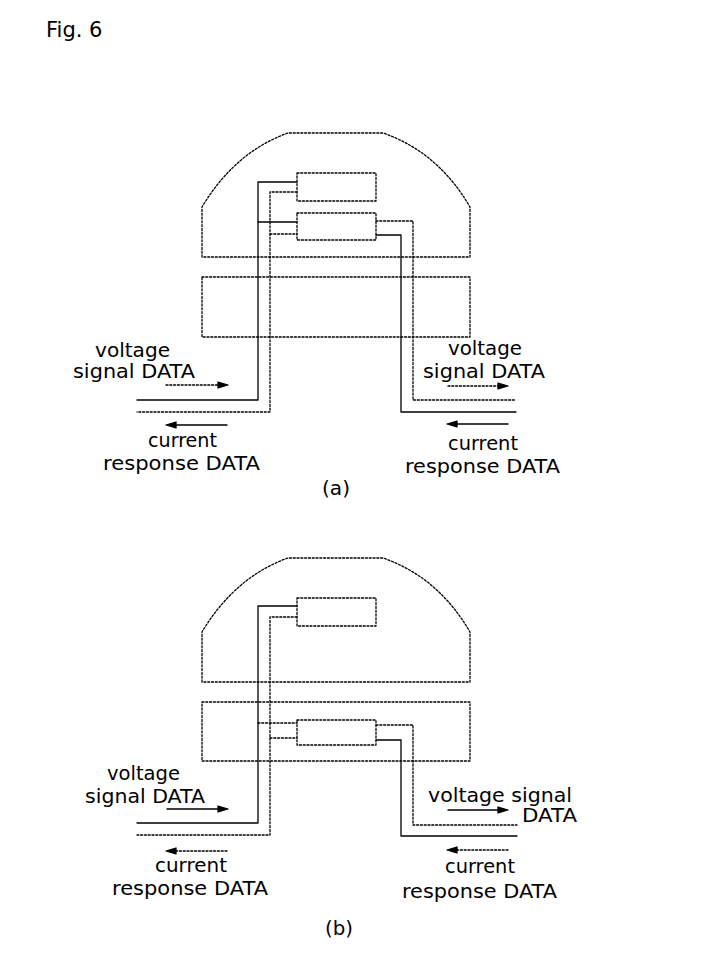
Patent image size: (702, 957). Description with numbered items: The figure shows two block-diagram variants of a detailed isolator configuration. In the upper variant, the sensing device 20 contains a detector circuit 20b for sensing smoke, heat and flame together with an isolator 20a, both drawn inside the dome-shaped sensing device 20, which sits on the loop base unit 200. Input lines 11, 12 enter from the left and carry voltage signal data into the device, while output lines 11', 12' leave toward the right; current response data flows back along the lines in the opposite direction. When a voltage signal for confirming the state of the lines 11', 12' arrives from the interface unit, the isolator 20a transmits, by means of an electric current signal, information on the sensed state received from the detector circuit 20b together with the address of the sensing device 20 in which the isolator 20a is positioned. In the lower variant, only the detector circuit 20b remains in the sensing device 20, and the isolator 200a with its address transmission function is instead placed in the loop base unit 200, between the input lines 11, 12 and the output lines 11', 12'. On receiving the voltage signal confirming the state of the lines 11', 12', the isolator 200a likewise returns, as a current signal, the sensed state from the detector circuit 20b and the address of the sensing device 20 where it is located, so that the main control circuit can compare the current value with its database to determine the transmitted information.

The sensing device 20 is at (404, 167).
The isolator 20a is at (335, 236).
The detector circuit 20b is at (333, 182).
The line 11 is at (217, 502).
The line 12 is at (217, 513).
The line 11' is at (446, 523).
The line 12' is at (446, 535).
The loop base unit 200 is at (202, 303).
The isolator 200a is at (325, 740).